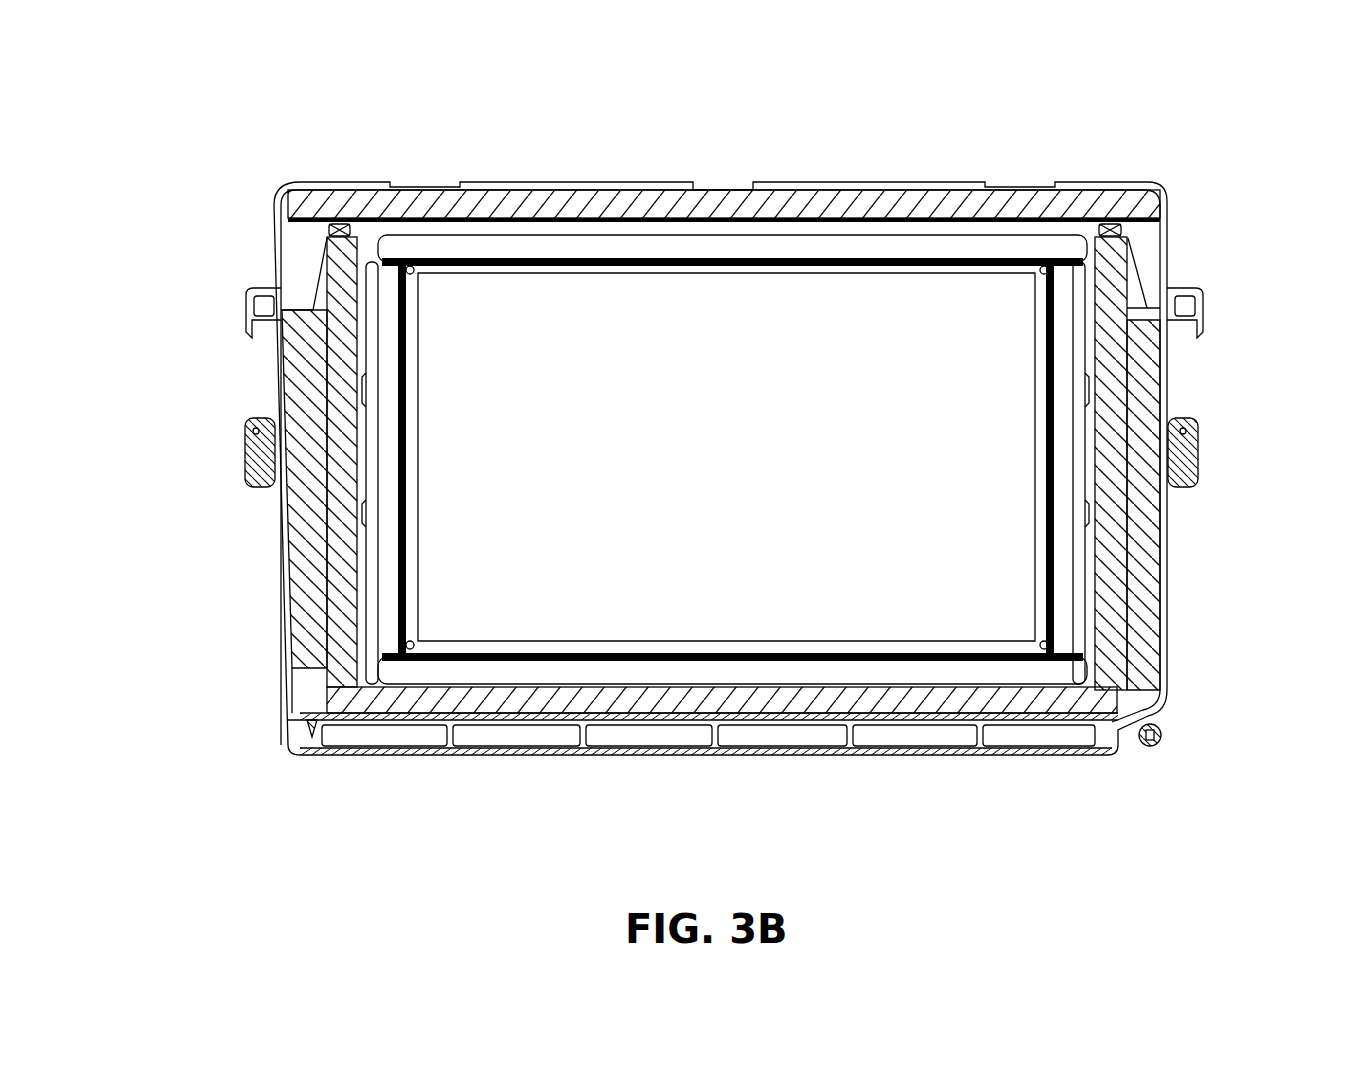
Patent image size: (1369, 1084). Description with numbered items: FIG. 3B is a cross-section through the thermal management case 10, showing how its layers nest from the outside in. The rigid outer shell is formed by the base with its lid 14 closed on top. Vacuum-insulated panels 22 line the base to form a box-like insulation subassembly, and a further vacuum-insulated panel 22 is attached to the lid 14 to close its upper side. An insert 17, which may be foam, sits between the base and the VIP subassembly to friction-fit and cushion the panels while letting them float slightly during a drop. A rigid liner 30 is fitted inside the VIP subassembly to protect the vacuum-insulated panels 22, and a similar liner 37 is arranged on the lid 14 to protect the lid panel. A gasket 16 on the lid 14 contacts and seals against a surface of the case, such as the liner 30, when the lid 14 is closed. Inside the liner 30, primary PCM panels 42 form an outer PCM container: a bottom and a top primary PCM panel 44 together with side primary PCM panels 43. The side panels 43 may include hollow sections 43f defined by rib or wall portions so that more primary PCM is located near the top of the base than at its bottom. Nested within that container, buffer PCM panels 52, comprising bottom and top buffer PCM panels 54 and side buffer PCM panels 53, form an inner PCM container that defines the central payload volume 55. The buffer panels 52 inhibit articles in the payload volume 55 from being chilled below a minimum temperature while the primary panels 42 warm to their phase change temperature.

The thermal management case 10 is at (184, 124).
The lid 14 is at (1003, 190).
The gasket 16 is at (1130, 232).
The insert 17 is at (312, 668).
The vacuum-insulated panel 22 is at (340, 291).
The liner 30 is at (1137, 270).
The liner 37 is at (330, 217).
The primary PCM panel 42 is at (730, 459).
The side primary PCM panel 43 is at (357, 401).
The hollow section 43f is at (356, 347).
The bottom and top primary PCM panel 44 is at (516, 236).
The buffer PCM panel 52 is at (830, 477).
The side buffer PCM panel 53 is at (1050, 527).
The bottom and top buffer PCM panel 54 is at (699, 258).
The payload volume 55 is at (738, 478).